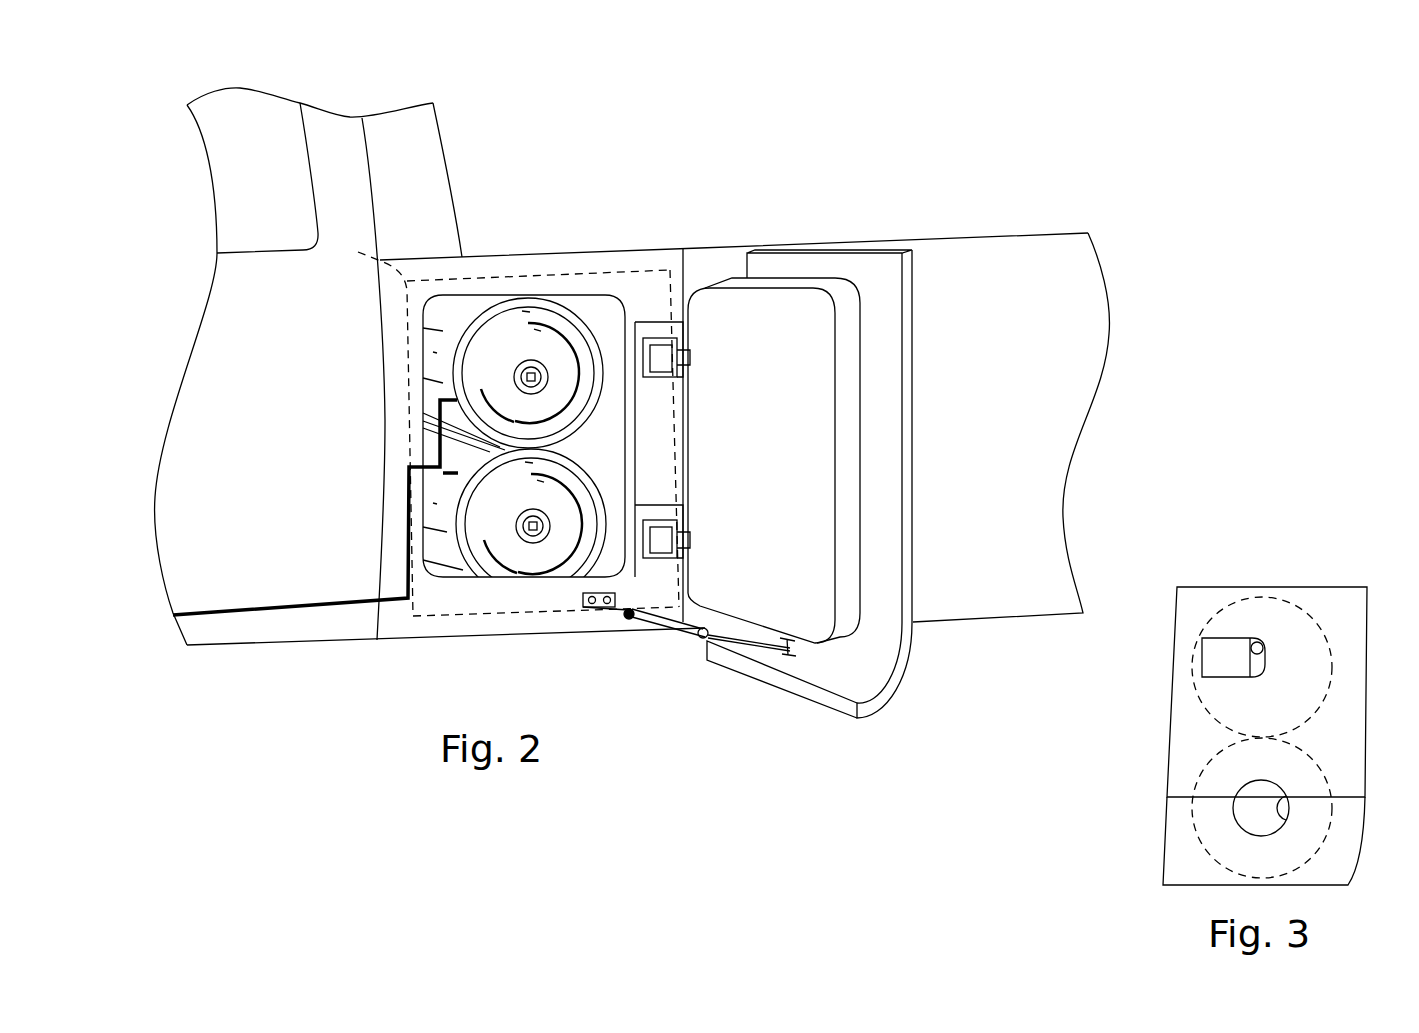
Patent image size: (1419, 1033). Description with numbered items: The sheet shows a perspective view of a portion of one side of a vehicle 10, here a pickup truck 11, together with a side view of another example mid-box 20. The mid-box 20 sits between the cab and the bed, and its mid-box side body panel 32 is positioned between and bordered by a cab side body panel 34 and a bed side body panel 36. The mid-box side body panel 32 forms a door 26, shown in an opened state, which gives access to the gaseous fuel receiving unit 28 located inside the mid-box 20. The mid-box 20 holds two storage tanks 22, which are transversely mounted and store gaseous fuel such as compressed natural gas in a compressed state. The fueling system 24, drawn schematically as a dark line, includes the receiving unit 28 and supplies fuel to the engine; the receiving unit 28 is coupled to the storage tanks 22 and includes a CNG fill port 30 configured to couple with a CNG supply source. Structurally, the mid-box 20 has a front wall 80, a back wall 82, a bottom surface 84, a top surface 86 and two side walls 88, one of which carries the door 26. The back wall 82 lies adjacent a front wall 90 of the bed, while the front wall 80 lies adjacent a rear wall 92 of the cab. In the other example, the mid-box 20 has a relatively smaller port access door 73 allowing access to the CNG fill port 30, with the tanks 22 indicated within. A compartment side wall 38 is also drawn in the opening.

In FIG. 2, the vehicle 10 is at (937, 161).
In FIG. 2, the pickup truck 11 is at (709, 180).
In FIG. 2, the mid-box 20 is at (507, 258).
In FIG. 3, the mid-box 20 is at (1283, 587).
In FIG. 2, the storage tank 22 is at (580, 320).
In FIG. 3, the storage tank 22 is at (1312, 605).
In FIG. 2, the fueling system 24 is at (265, 607).
In FIG. 2, the door 26 is at (703, 300).
In FIG. 2, the gaseous fuel receiving unit 28 is at (517, 540).
In FIG. 2, the CNG fill port 30 is at (530, 533).
In FIG. 2, the mid-box side body panel 32 is at (768, 262).
In FIG. 2, the cab side body panel 34 is at (288, 394).
In FIG. 2, the bed side body panel 36 is at (1000, 337).
In FIG. 2, the compartment side wall 38 is at (440, 330).
In FIG. 3, the port access door 73 is at (1225, 812).
In FIG. 2, the front wall 80 is at (374, 428).
In FIG. 2, the back wall 82 is at (672, 295).
In FIG. 2, the bottom surface 84 is at (510, 617).
In FIG. 2, the top surface 86 is at (553, 272).
In FIG. 2, the side wall 88 is at (741, 470).
In FIG. 2, the front wall of the bed 90 is at (690, 275).
In FIG. 2, the rear wall of the cab 92 is at (380, 367).